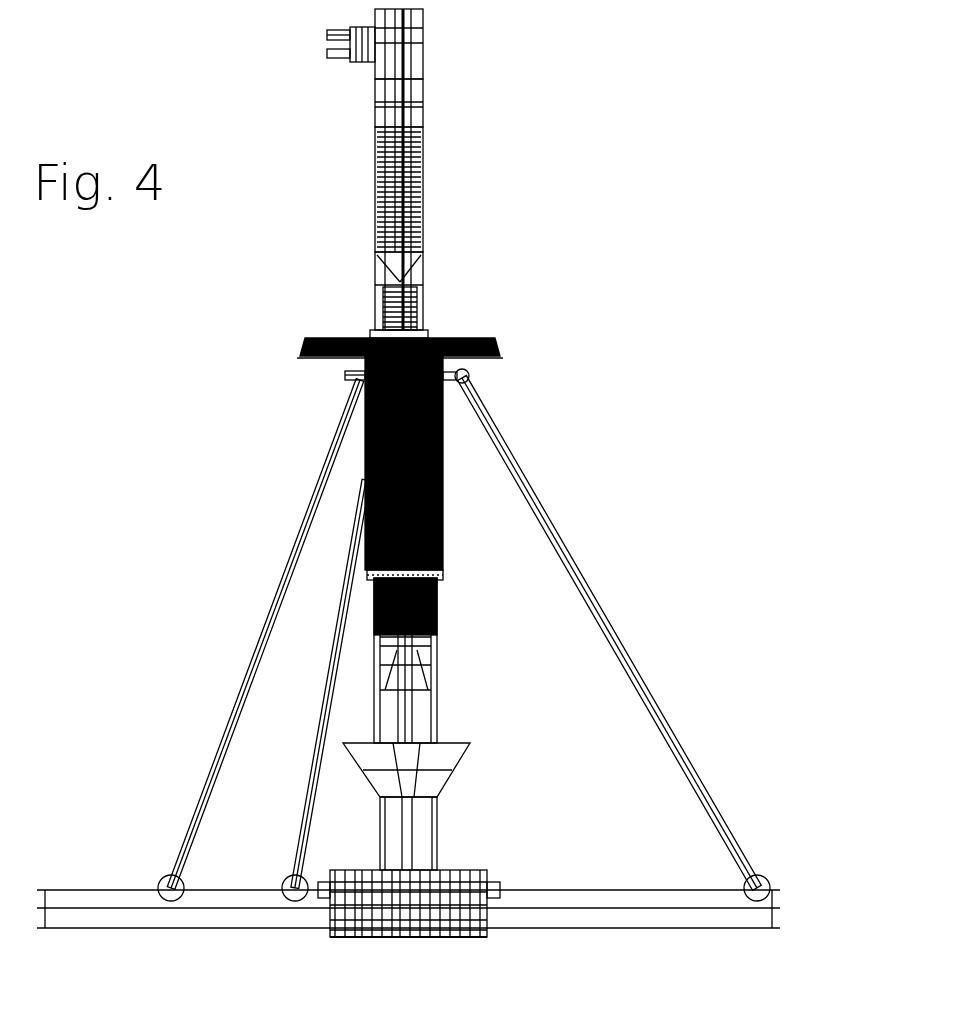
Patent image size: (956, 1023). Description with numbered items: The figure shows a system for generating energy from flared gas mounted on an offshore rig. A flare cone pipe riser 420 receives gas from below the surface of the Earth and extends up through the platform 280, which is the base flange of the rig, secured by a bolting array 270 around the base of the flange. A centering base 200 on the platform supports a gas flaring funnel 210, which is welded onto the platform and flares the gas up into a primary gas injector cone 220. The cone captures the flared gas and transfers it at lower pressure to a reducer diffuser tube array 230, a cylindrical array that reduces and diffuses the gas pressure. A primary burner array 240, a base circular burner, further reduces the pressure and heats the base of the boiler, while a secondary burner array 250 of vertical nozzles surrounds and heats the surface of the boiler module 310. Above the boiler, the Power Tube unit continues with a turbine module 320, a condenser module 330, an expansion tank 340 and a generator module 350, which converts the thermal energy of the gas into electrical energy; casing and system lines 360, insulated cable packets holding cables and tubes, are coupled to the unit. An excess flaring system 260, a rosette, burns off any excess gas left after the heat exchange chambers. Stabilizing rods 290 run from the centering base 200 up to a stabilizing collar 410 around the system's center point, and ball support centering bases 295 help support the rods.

The centering base 200 is at (500, 885).
The gas flaring funnel 210 is at (370, 770).
The primary gas injector cone 220 is at (425, 663).
The reducer diffuser tube array 230 is at (440, 606).
The primary burner array 240 is at (450, 562).
The secondary burner array 250 is at (450, 400).
The excess flaring system 260 is at (300, 347).
The bolting array 270 is at (475, 935).
The platform 280 is at (95, 875).
The stabilizing rods 290 is at (310, 512).
The ball support centering bases 295 is at (290, 880).
The boiler module 310 is at (450, 468).
The turbine module 320 is at (440, 300).
The condenser module 330 is at (440, 165).
The expansion tank 340 is at (440, 100).
The generator module 350 is at (430, 29).
The casing and system lines 360 is at (322, 47).
The stabilizing collar 410 is at (345, 383).
The flare cone pipe riser 420 is at (415, 828).